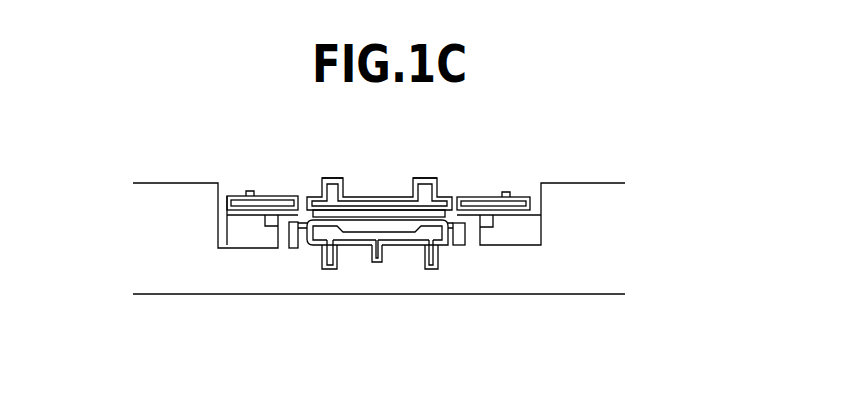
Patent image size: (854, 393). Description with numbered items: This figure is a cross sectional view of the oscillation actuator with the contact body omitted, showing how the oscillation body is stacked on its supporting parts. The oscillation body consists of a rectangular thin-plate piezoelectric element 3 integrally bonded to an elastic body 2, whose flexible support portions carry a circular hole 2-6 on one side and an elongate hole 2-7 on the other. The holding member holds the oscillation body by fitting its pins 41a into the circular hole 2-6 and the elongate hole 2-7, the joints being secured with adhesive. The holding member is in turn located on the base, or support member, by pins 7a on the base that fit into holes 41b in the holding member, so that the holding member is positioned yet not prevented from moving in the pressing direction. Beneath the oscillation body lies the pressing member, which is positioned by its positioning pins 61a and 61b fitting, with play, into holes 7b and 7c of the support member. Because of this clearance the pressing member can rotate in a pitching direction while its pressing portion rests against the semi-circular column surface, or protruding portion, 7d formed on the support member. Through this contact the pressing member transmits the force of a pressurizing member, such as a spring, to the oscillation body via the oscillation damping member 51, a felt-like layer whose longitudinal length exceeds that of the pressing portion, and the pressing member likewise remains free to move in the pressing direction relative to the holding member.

The elastic body 2 is at (378, 197).
The circular hole 2-6 is at (275, 196).
The elongate hole 2-7 is at (490, 197).
The piezoelectric element 3 is at (362, 210).
The oscillation damping member 51 is at (400, 210).
The pins 41a is at (249, 192).
The holes 41b is at (284, 224).
The pins 7a is at (291, 236).
The hole 7b is at (330, 270).
The hole 7c is at (380, 263).
The semi-circular column surface (protruding portion) 7d is at (363, 246).
The positioning pin 61a is at (324, 250).
The positioning pin 61b is at (387, 252).